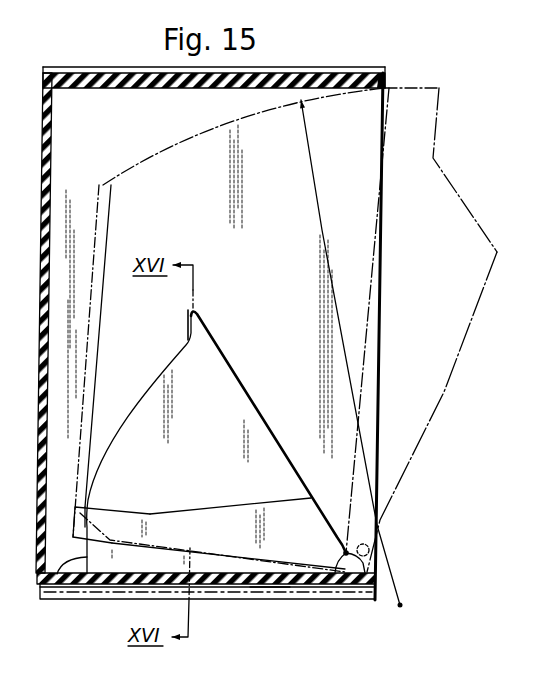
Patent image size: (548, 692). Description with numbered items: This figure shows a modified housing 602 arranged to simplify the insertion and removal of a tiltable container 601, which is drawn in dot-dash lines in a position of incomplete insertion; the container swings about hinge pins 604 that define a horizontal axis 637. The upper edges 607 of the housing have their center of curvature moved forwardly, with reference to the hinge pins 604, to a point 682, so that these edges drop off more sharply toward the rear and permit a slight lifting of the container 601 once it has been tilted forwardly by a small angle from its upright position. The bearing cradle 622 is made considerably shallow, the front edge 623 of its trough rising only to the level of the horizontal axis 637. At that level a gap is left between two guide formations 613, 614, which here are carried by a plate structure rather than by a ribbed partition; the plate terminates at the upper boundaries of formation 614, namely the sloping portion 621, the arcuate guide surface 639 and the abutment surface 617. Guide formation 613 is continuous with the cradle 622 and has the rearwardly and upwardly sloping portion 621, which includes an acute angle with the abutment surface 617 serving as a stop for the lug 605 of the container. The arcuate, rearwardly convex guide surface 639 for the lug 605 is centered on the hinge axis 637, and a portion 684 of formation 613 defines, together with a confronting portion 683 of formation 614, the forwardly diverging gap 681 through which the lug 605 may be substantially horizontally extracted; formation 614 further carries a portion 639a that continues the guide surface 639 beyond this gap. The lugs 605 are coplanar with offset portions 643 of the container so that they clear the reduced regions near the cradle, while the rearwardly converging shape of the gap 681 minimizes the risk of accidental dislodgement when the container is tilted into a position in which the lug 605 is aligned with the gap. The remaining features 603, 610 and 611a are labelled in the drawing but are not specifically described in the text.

The container 601 is at (348, 143).
The housing 602 is at (97, 67).
The compartment 603 is at (304, 275).
The hinge pins 604 is at (346, 550).
The lug 605 is at (90, 518).
The upper edges 607 is at (147, 157).
The bottom wall 610 is at (110, 582).
The side wall 611a is at (97, 159).
The guide formation 613 is at (222, 583).
The guide formation 614 is at (214, 392).
The abutment surface 617 is at (187, 324).
The sloping portion 621 is at (241, 387).
The bearing cradle 622 is at (335, 573).
The front edge 623 is at (368, 571).
The horizontal axis 637 is at (343, 553).
The guide surface 639 is at (136, 395).
The extension portion 639a is at (64, 572).
The offset portions 643 is at (444, 297).
The gap 681 is at (279, 626).
The center point 682 is at (400, 605).
The confronting portion 683 is at (194, 550).
The gap-defining portion 684 is at (244, 508).